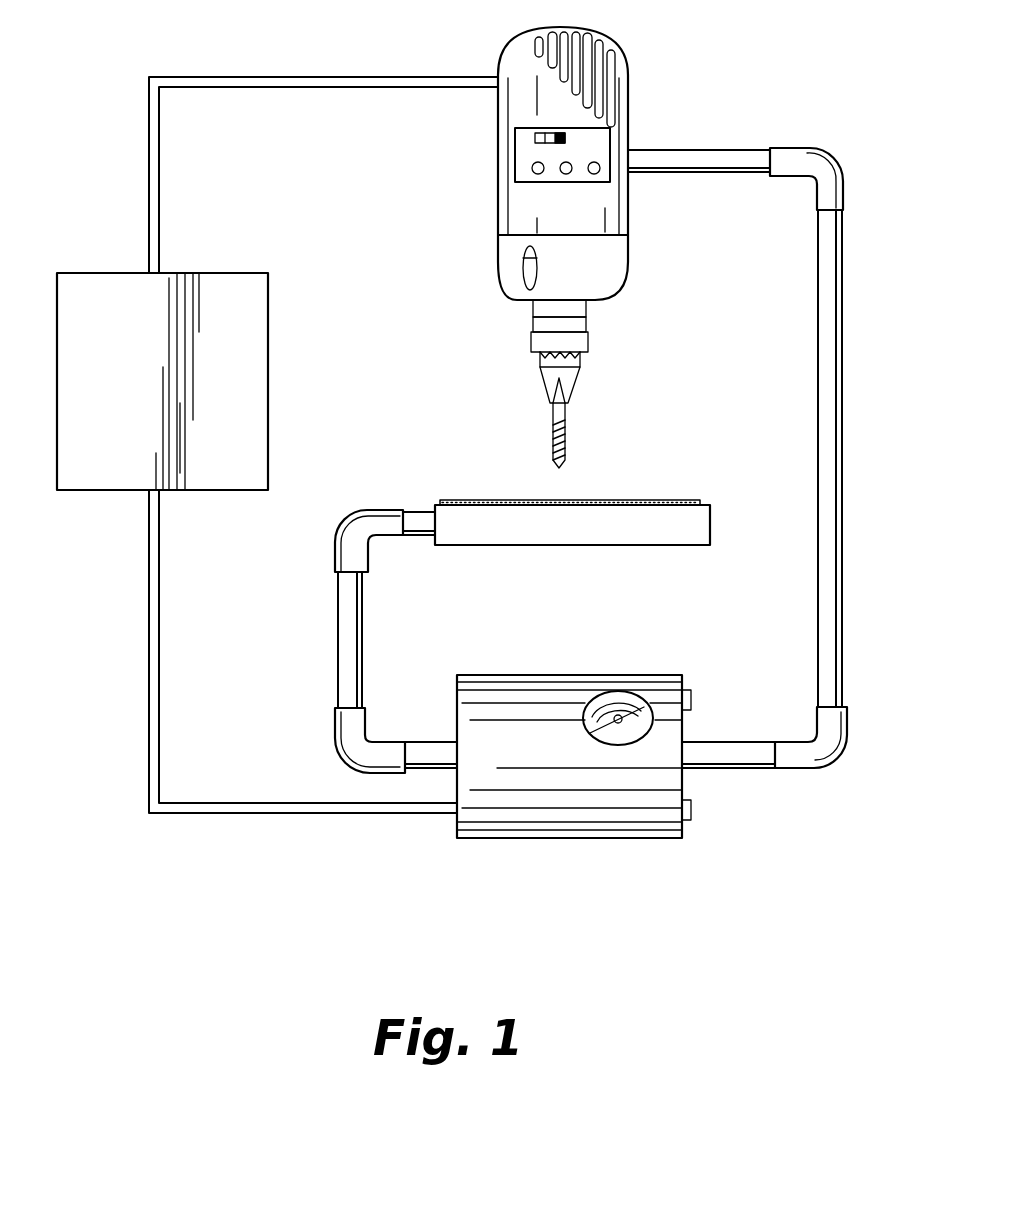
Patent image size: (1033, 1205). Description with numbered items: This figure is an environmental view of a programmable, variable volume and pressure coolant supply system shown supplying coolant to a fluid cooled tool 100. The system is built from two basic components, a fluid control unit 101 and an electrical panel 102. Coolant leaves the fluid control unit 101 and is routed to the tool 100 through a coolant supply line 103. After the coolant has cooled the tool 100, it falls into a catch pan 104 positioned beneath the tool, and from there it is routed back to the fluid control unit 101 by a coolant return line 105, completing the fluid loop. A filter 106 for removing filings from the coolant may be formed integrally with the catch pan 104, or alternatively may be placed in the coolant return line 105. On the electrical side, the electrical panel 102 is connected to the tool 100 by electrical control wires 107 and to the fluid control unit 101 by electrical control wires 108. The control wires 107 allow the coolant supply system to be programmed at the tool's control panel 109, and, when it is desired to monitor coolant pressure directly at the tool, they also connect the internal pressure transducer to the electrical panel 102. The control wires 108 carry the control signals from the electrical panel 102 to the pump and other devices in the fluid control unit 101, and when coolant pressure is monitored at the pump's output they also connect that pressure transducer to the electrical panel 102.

The tool 100 is at (628, 60).
The fluid control unit 101 is at (563, 838).
The electrical panel 102 is at (130, 364).
The coolant supply line 103 is at (843, 571).
The catch pan 104 is at (620, 545).
The coolant return line 105 is at (363, 655).
The filter 106 is at (665, 498).
The electrical control wires 107 is at (316, 87).
The electrical control wires 108 is at (162, 700).
The control panel 109 is at (597, 143).